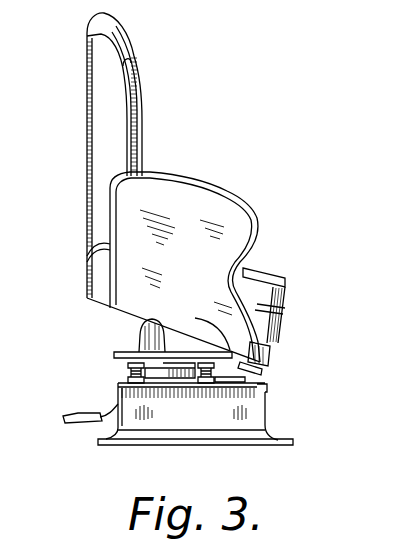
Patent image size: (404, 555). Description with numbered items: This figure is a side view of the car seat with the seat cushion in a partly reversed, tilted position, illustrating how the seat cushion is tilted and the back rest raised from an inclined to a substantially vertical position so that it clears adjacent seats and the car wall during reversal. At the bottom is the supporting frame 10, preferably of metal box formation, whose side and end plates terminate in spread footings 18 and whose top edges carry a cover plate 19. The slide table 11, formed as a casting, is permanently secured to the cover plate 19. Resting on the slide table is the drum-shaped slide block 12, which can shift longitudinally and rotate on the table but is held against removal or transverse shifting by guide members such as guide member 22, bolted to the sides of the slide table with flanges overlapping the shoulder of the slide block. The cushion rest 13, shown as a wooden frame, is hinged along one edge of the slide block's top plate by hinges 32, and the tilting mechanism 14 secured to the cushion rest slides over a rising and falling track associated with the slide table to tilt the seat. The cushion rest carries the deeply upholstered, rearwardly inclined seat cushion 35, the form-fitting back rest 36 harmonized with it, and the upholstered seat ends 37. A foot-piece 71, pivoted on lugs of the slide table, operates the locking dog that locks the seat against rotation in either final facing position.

The supporting frame 10 is at (270, 417).
The slide table 11 is at (268, 383).
The slide block 12 is at (127, 372).
The cushion rest 13 is at (250, 353).
The tilting mechanism 14 is at (148, 337).
The spread footings 18 is at (292, 442).
The cover plate 19 is at (268, 391).
The guide member 22 is at (183, 373).
The hinges 32 is at (205, 322).
The seat cushion 35 is at (290, 283).
The back rest 36 is at (107, 138).
The seat ends 37 is at (174, 273).
The foot-piece 71 is at (63, 418).